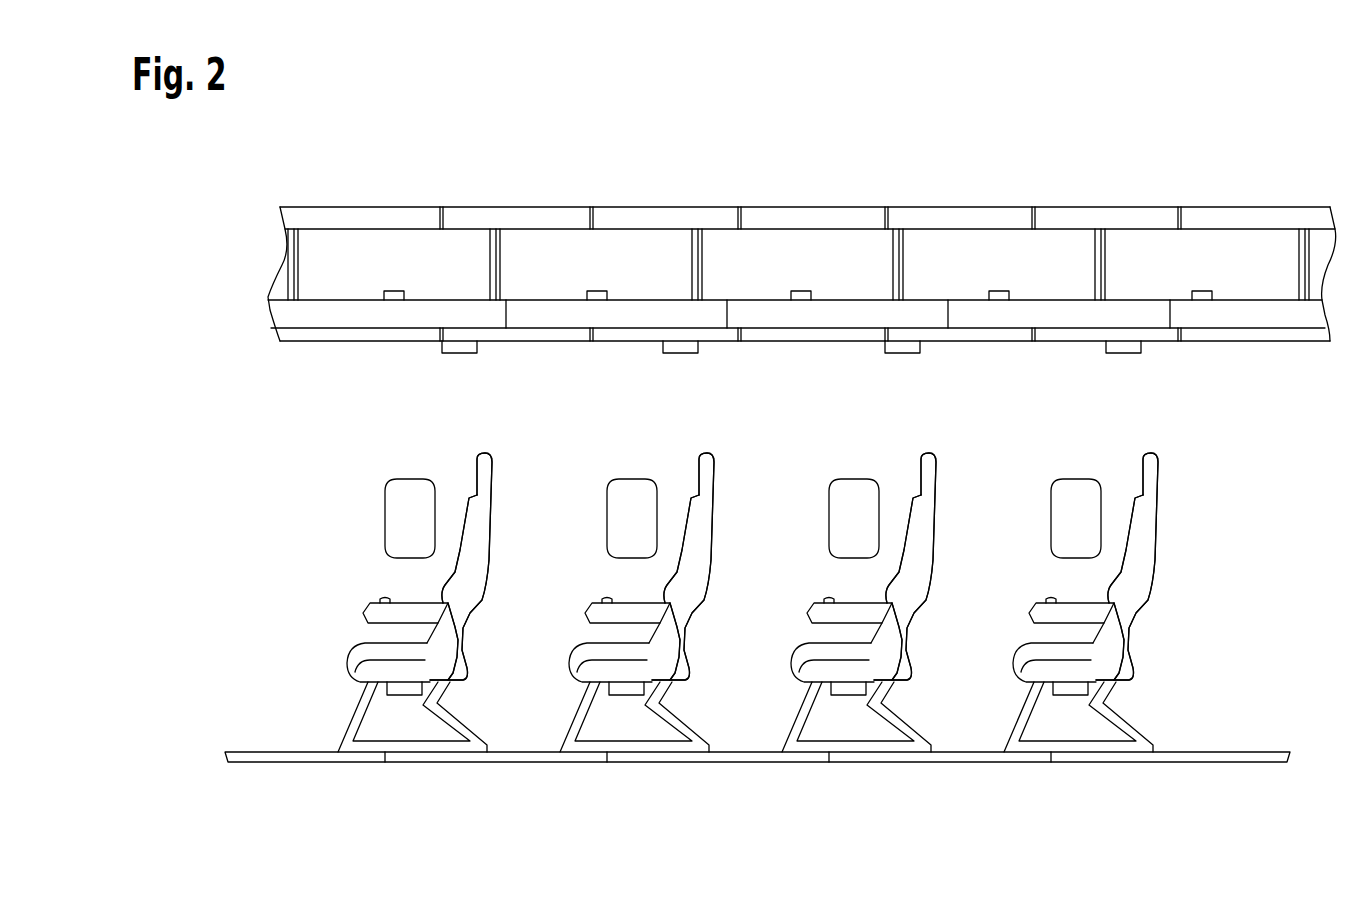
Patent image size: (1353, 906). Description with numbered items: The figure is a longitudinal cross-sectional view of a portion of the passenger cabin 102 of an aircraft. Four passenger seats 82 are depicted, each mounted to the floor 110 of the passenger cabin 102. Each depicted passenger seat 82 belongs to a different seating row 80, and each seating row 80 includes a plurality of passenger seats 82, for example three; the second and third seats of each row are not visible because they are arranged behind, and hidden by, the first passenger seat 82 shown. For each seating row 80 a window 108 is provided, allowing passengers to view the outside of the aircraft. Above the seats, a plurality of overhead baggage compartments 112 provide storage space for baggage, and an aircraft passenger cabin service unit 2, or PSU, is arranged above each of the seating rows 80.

The aircraft passenger cabin service unit 2 is at (1106, 351).
The overhead baggage compartment 112 is at (1210, 252).
The seating row 80 is at (1151, 440).
The passenger seat 82 is at (1143, 563).
The window 108 is at (1060, 503).
The floor 110 is at (1237, 750).
The passenger cabin 102 is at (278, 603).